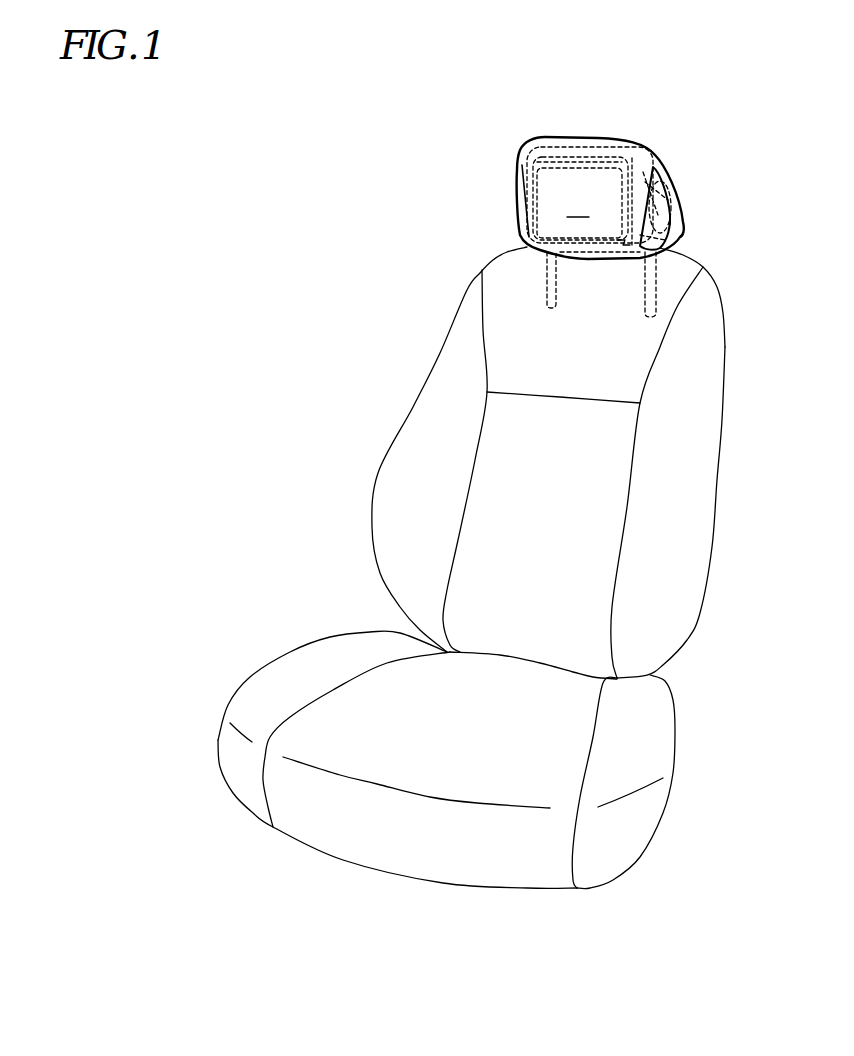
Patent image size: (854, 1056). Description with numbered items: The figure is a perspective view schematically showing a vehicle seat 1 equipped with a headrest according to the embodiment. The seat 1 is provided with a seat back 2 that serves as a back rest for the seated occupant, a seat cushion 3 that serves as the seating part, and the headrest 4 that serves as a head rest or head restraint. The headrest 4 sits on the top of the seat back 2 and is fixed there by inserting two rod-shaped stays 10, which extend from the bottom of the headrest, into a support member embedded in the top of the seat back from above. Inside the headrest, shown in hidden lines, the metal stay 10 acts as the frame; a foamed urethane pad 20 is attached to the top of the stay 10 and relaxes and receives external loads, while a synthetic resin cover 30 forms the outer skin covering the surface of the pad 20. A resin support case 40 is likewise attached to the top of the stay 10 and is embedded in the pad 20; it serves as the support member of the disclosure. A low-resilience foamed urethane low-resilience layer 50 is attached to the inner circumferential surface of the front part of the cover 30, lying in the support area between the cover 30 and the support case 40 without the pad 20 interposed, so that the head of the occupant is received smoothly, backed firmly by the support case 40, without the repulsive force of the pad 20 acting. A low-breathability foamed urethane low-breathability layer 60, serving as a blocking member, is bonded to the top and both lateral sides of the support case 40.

The vehicle seat 1 is at (244, 174).
The seat back 2 is at (440, 350).
The seat cushion 3 is at (310, 650).
The headrest 4 is at (533, 140).
The stay 10 is at (555, 273).
The pad 20 is at (652, 162).
The cover 30 is at (575, 143).
The support case 40 is at (670, 206).
The low-resilience layer 50 is at (605, 187).
The low-breathability layer 60 is at (623, 157).